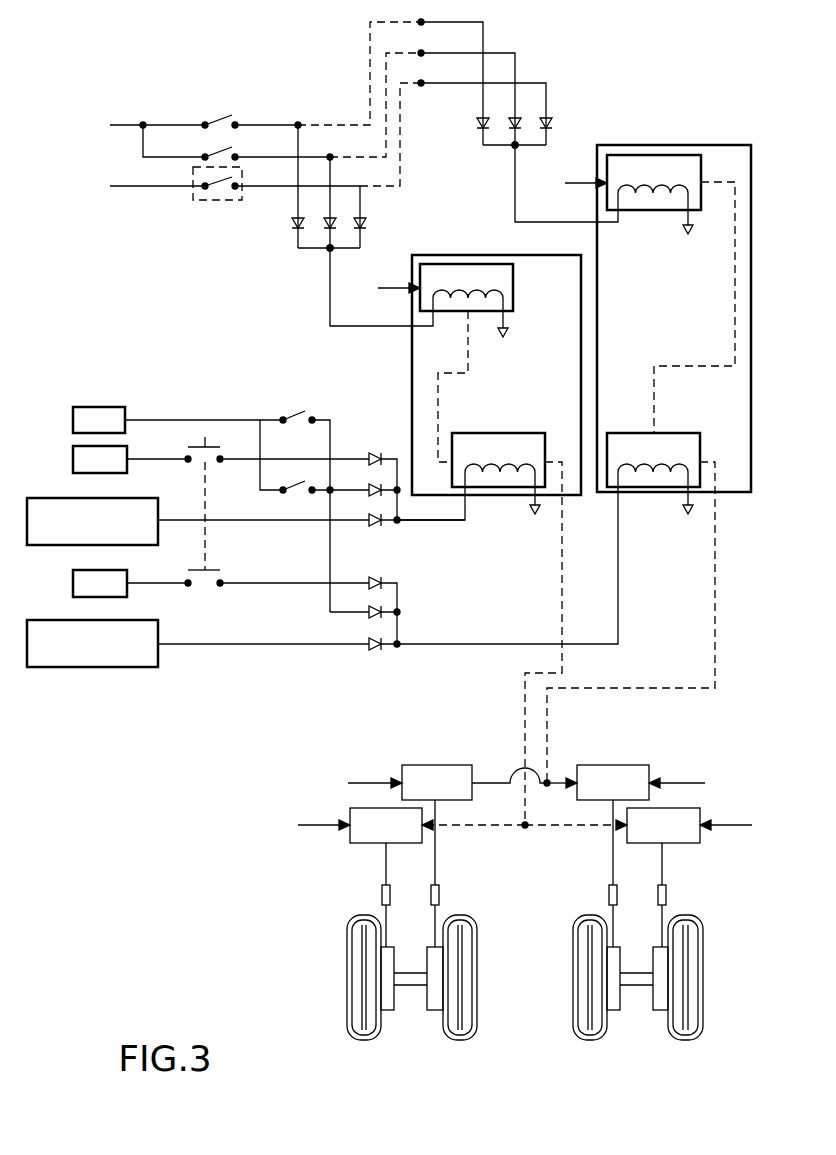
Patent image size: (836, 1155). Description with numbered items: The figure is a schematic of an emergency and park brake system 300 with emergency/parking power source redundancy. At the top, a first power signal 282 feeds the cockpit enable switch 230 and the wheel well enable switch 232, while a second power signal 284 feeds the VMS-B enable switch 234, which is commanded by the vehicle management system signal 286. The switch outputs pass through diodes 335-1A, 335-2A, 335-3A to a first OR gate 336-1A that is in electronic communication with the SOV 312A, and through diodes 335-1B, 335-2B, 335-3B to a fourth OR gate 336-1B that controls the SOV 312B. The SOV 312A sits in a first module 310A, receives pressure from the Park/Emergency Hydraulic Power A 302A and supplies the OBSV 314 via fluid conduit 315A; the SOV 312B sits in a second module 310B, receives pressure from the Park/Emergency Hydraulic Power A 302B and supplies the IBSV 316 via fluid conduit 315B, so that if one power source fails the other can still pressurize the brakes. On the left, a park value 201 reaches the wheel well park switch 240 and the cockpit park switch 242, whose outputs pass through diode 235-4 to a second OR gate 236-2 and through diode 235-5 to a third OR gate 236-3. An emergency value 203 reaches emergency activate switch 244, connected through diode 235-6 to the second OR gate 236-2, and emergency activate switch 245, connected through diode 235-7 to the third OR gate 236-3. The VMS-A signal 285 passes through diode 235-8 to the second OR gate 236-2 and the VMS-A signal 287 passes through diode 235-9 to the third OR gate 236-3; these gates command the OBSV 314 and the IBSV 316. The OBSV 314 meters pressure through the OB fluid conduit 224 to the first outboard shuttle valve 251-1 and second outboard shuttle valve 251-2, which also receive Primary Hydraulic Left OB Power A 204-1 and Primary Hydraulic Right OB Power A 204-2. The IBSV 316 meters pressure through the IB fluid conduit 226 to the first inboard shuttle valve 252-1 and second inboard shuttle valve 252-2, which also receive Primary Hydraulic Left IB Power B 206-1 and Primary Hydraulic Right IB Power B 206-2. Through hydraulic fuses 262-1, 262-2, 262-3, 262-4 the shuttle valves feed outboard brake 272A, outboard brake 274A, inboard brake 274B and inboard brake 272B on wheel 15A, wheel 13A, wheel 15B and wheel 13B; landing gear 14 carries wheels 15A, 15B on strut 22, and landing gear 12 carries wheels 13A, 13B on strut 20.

The emergency and park brake system 300 is at (650, 55).
The first power signal 282 is at (187, 138).
The second power signal 284 is at (218, 186).
The cockpit enable switch 230 is at (229, 116).
The wheel well enable switch 232 is at (214, 150).
The VMS-B enable switch 234 is at (200, 178).
The diode 335-1A is at (292, 226).
The diode 335-2A is at (365, 229).
The diode 335-3A is at (336, 222).
The first OR gate 336-1A is at (328, 250).
The diode 335-1B is at (478, 122).
The diode 335-2B is at (551, 118).
The diode 335-3B is at (521, 115).
The fourth OR gate 336-1B is at (513, 148).
The first module 310A is at (442, 256).
The SOV 312A is at (493, 264).
The Park/Emergency Hydraulic Power A 302A is at (375, 288).
The fluid conduit 315A is at (470, 372).
The OBSV 314 is at (500, 433).
The OB fluid conduit 224 is at (560, 562).
The second module 310B is at (617, 145).
The SOV 312B is at (660, 155).
The Park/Emergency Hydraulic Power A 302B is at (562, 185).
The fluid conduit 315B is at (735, 295).
The IBSV 316 is at (620, 433).
The IB fluid conduit 226 is at (713, 553).
The park value 201 is at (178, 420).
The emergency value 203 is at (221, 521).
The emergency activate switch 244 is at (214, 443).
The emergency activate switch 245 is at (212, 569).
The wheel well park switch 240 is at (296, 413).
The cockpit park switch 242 is at (297, 490).
The VMS-A signal 285 is at (233, 519).
The vehicle management system signal 286 is at (50, 620).
The VMS-A signal 287 is at (226, 643).
The diode 235-4 is at (369, 486).
The diode 235-5 is at (366, 617).
The diode 235-6 is at (374, 453).
The diode 235-7 is at (384, 578).
The diode 235-8 is at (374, 525).
The diode 235-9 is at (376, 650).
The second OR gate 236-2 is at (400, 523).
The third OR gate 236-3 is at (400, 642).
The first inboard shuttle valve 252-1 is at (437, 765).
The second inboard shuttle valve 252-2 is at (613, 765).
The first outboard shuttle valve 251-1 is at (372, 843).
The second outboard shuttle valve 251-2 is at (680, 843).
The Primary Hydraulic Left IB Power B 206-1 is at (349, 783).
The Primary Hydraulic Right IB Power B 206-2 is at (703, 783).
The Primary Hydraulic Left OB Power A 204-1 is at (298, 825).
The Primary Hydraulic Right OB Power A 204-2 is at (752, 825).
The hydraulic fuse 262-1 is at (382, 894).
The hydraulic fuse 262-2 is at (667, 894).
The hydraulic fuse 262-3 is at (440, 894).
The hydraulic fuse 262-4 is at (609, 894).
The landing gear 14 is at (342, 1048).
The landing gear 12 is at (573, 1050).
The wheel 15A is at (347, 972).
The wheel 15B is at (477, 1015).
The wheel 13A is at (694, 1038).
The wheel 13B is at (573, 987).
The strut 22 is at (405, 988).
The strut 20 is at (642, 972).
The outboard brake 272A is at (388, 1010).
The inboard brake 272B is at (614, 1010).
The outboard brake 274A is at (663, 1010).
The inboard brake 274B is at (435, 1010).